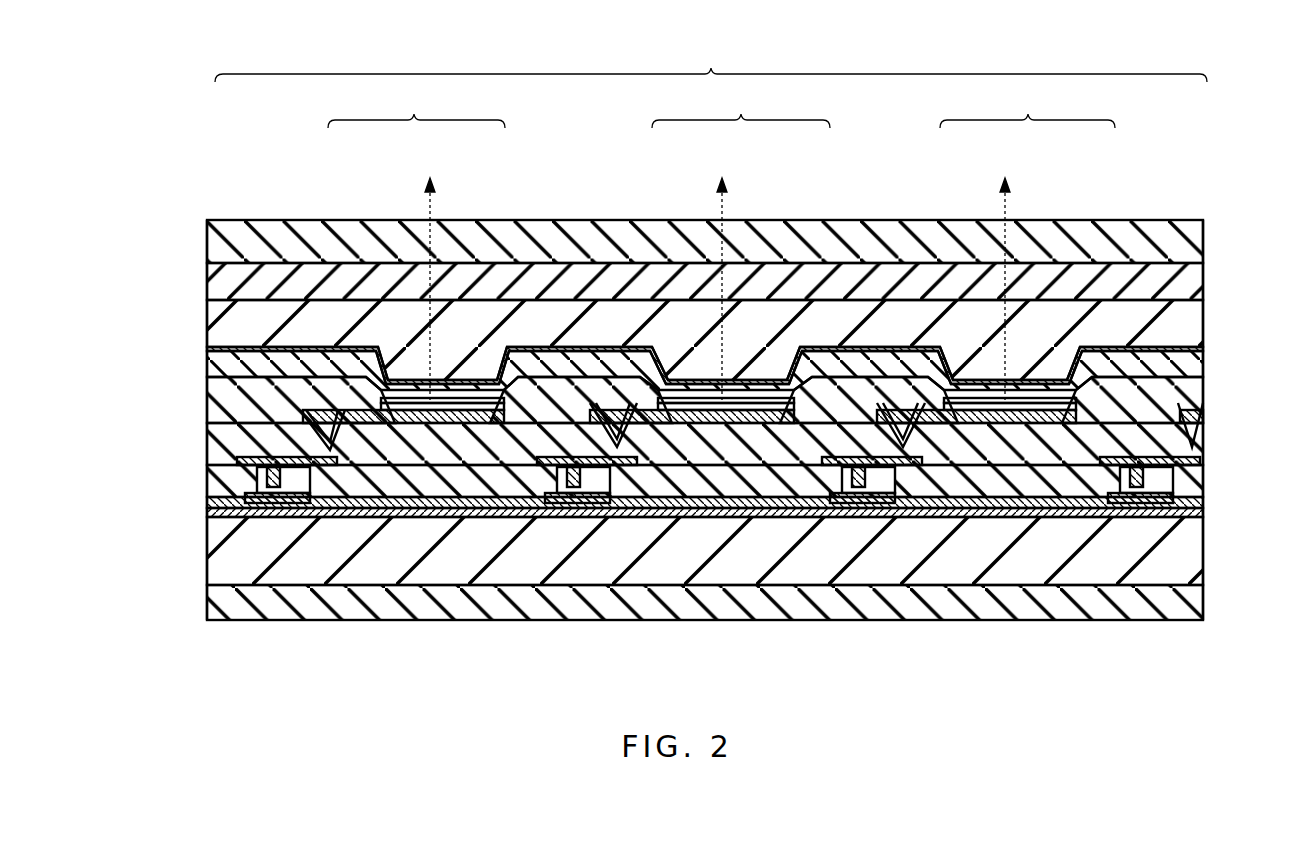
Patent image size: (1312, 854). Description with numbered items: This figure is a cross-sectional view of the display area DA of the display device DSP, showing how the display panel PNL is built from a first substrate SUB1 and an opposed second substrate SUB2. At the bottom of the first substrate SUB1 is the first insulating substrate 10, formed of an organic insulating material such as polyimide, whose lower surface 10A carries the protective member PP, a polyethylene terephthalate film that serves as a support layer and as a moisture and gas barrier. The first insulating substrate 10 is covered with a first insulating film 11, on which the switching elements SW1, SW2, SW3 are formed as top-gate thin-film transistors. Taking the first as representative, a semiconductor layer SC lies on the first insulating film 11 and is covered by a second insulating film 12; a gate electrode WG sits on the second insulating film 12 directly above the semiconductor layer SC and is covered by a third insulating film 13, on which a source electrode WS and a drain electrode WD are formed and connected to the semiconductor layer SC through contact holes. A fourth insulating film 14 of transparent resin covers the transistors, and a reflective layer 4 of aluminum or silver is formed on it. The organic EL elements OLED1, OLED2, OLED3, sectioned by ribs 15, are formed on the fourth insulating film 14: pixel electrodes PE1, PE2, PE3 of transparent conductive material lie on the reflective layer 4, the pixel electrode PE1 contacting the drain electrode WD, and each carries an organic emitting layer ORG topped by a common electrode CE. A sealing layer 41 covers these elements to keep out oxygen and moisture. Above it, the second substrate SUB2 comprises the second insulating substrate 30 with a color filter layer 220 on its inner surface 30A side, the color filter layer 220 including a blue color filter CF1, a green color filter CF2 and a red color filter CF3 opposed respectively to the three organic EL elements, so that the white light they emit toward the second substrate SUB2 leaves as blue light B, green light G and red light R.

The display device DSP is at (675, 341).
The display panel PNL is at (675, 387).
The first substrate SUB1 is at (666, 403).
The second substrate SUB2 is at (667, 278).
The display area DA is at (711, 60).
The organic EL element OLED1 is at (416, 106).
The organic EL element OLED2 is at (741, 106).
The organic EL element OLED3 is at (1027, 106).
The common electrode CE is at (340, 398).
The pixel electrode PE1 is at (392, 410).
The pixel electrode PE2 is at (675, 410).
The pixel electrode PE3 is at (960, 410).
The organic emitting layer ORG is at (475, 404).
The color filter CF1 is at (505, 282).
The color filter CF2 is at (835, 282).
The color filter CF3 is at (1120, 282).
The blue light B is at (430, 275).
The green light G is at (722, 275).
The red light R is at (1005, 275).
The rib 15 is at (232, 379).
The second insulating substrate 30 is at (230, 243).
The color filter layer 220 is at (212, 278).
The sealing layer 41 is at (230, 310).
The inner surface 30A is at (335, 280).
The source electrode WS is at (262, 446).
The fourth insulating film 14 is at (226, 444).
The gate electrode WG is at (262, 469).
The third insulating film 13 is at (230, 480).
The second insulating film 12 is at (226, 505).
The first insulating film 11 is at (236, 513).
The first insulating substrate 10 is at (228, 561).
The protective member PP is at (230, 601).
The semiconductor layer SC is at (262, 505).
The switching element SW1 is at (281, 522).
The switching element SW2 is at (557, 522).
The switching element SW3 is at (849, 522).
The drain electrode WD is at (338, 462).
The reflective layer 4 is at (440, 470).
The surface 10A is at (1155, 512).